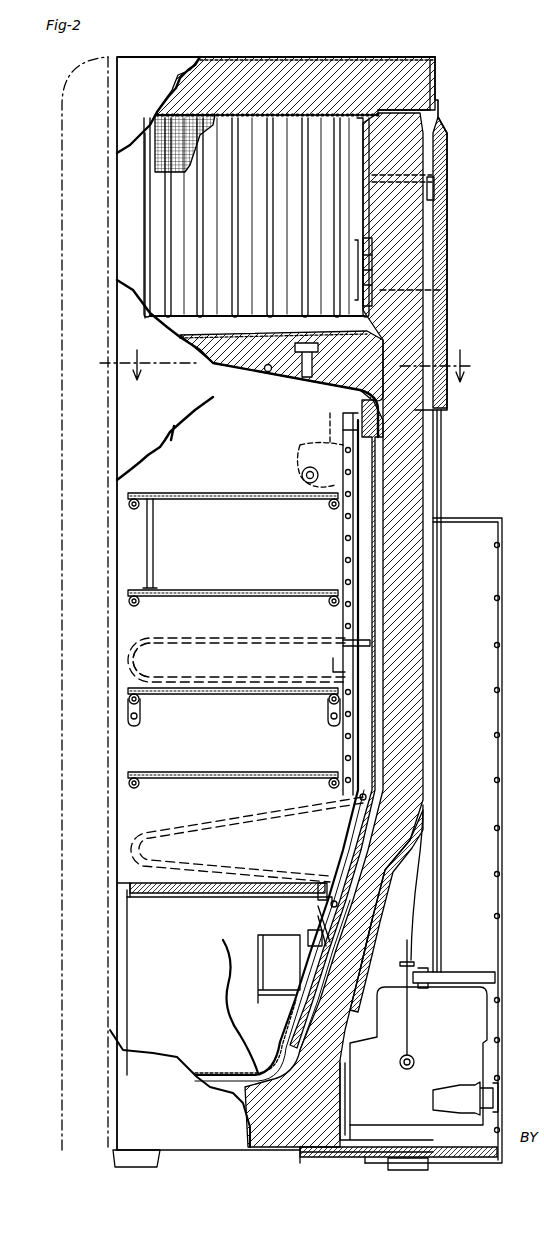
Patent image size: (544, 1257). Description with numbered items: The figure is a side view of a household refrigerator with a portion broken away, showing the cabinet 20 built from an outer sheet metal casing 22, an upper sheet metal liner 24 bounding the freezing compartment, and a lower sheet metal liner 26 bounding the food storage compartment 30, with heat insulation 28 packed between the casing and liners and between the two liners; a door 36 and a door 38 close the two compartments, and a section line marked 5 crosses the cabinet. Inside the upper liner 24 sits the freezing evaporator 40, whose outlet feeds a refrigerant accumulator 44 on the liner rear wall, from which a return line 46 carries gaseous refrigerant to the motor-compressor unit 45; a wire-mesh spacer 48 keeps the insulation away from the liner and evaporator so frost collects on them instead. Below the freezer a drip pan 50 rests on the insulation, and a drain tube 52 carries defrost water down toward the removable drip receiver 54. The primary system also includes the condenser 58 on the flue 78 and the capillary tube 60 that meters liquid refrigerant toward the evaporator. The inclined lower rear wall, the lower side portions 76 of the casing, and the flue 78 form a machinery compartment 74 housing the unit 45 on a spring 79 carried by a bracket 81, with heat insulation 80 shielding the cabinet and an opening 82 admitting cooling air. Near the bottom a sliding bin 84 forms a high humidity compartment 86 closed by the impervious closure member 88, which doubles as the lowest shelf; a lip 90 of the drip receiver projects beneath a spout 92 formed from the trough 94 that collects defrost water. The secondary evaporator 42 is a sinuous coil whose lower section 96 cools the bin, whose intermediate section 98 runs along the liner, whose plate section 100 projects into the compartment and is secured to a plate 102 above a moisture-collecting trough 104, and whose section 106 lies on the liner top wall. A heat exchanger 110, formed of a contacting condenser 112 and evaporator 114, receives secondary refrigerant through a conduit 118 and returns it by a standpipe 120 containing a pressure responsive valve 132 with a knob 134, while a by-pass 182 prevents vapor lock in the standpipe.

The cabinet 20 is at (435, 60).
The outer sheet metal casing 22 is at (143, 63).
The upper sheet metal liner 24 is at (178, 183).
The lower sheet metal liner 26 is at (212, 393).
The heat insulation 28 is at (355, 58).
The food storage compartment 30 is at (252, 556).
The door 36 is at (60, 78).
The door 38 is at (62, 706).
The primary refrigerating system evaporator 40 is at (305, 162).
The secondary refrigerating system evaporator 42 is at (128, 652).
The refrigerant accumulator 44 is at (358, 135).
The motor-compressor unit 45 is at (470, 1027).
The refrigerant return line 46 is at (434, 192).
The spacer 48 is at (262, 118).
The drip pan 50 is at (205, 340).
The drain tube 52 is at (290, 378).
The removable drip receiver 54 is at (260, 995).
The refrigerant condenser 58 is at (494, 777).
The capillary tube 60 is at (440, 216).
The machinery compartment 74 is at (425, 921).
The lower side portions of casing 76 is at (420, 1130).
The flue 78 is at (502, 708).
The spring 79 is at (420, 955).
The heat insulation 80 is at (382, 962).
The bracket 81 is at (455, 984).
The opening 82 is at (348, 1150).
The sliding bin 84 is at (120, 961).
The high humidity compartment 86 is at (246, 1038).
The closure member 88 is at (296, 883).
The lip 90 is at (312, 946).
The spout 92 is at (316, 916).
The trough 94 is at (316, 902).
The lower section of coil 96 is at (340, 974).
The intermediate section of coil 98 is at (280, 640).
The plate section of coil 100 is at (343, 573).
The plate 102 is at (343, 535).
The moisture-collecting trough 104 is at (333, 664).
The coil section 106 is at (262, 372).
The heat exchanger 110 is at (363, 258).
The heat exchanger condenser 112 is at (363, 242).
The heat exchanger evaporator 114 is at (363, 278).
The conduit 118 is at (445, 291).
The standpipe 120 is at (383, 440).
The pressure responsive valve 132 is at (301, 470).
The manual adjustment knob 134 is at (306, 464).
The by-pass 182 is at (330, 413).
The section line 5 is at (289, 366).